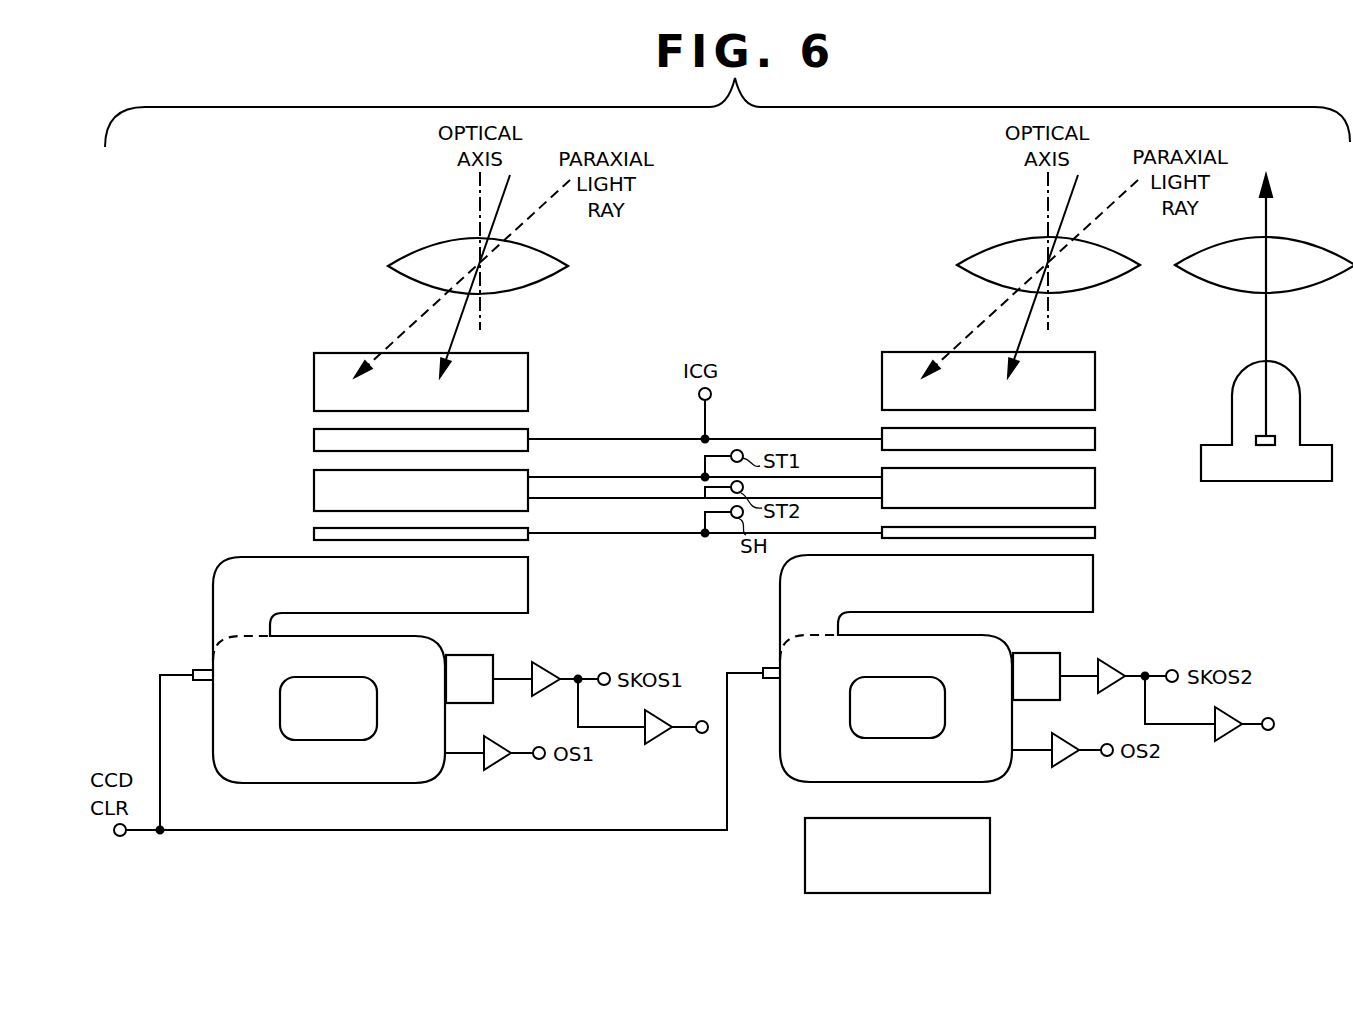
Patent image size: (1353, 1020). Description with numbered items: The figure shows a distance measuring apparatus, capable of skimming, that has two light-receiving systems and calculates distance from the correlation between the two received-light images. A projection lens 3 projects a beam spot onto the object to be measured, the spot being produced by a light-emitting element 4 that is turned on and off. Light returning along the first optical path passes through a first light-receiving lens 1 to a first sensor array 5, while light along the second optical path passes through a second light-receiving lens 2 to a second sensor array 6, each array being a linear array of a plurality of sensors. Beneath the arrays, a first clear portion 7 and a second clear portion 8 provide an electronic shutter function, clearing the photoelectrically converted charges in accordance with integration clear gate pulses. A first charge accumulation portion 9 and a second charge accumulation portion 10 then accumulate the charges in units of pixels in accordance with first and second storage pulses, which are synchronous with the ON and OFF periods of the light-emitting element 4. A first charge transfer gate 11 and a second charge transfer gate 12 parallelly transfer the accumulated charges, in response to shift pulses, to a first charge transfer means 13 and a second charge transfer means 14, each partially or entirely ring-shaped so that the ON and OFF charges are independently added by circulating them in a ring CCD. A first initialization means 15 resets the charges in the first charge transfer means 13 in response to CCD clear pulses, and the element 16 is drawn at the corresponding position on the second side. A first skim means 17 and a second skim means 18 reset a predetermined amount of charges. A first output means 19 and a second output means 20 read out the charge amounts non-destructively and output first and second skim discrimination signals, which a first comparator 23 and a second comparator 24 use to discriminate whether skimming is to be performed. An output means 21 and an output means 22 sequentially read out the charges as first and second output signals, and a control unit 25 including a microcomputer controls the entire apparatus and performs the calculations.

The first light-receiving lens 1 is at (568, 266).
The second light-receiving lens 2 is at (1000, 240).
The projection lens 3 is at (1305, 240).
The light-emitting element 4 is at (1245, 372).
The first sensor array 5 is at (314, 362).
The second sensor array 6 is at (1095, 365).
The first clear portion 7 is at (314, 437).
The second clear portion 8 is at (1095, 437).
The first charge accumulation portion 9 is at (314, 483).
The second charge accumulation portion 10 is at (1095, 480).
The first charge transfer gate 11 is at (314, 533).
The second charge transfer gate 12 is at (1095, 533).
The first charge transfer means 13 is at (222, 561).
The second charge transfer means 14 is at (1093, 590).
The first initialization means 15 is at (205, 668).
The clear gate 16 is at (770, 667).
The first skim means 17 is at (462, 655).
The second skim means 18 is at (1028, 653).
The first output means 19 is at (560, 650).
The second output means 20 is at (1115, 660).
The output means 21 is at (500, 770).
The output means 22 is at (1068, 767).
The first comparator 23 is at (660, 744).
The second comparator 24 is at (1230, 741).
The control unit 25 is at (990, 860).